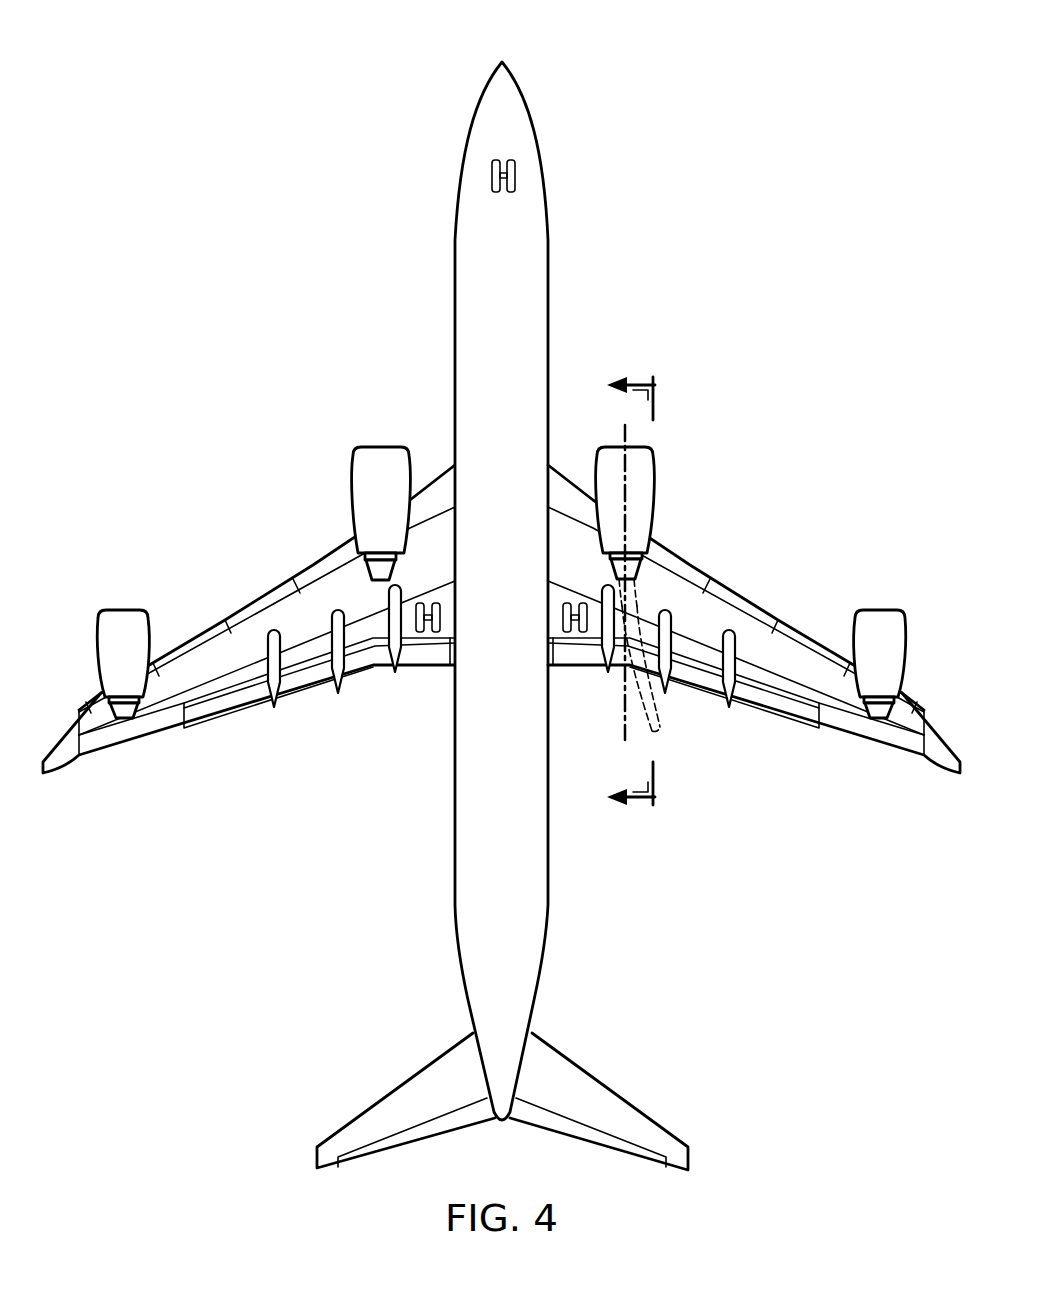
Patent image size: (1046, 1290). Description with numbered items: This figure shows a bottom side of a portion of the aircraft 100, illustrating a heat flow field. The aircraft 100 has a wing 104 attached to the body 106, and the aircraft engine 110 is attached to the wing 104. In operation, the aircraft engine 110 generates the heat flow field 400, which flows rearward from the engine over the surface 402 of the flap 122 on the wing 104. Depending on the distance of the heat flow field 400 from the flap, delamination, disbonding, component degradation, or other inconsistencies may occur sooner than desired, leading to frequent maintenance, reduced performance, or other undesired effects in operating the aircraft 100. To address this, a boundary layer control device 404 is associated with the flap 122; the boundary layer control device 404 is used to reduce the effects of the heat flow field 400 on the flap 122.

The aircraft 100 is at (360, 80).
The wing 104 is at (798, 630).
The body 106 is at (455, 309).
The aircraft engine 110 is at (655, 476).
The flap 122 is at (775, 698).
The heat flow field 400 is at (660, 724).
The surface 402 is at (628, 602).
The boundary layer control device 404 is at (620, 658).